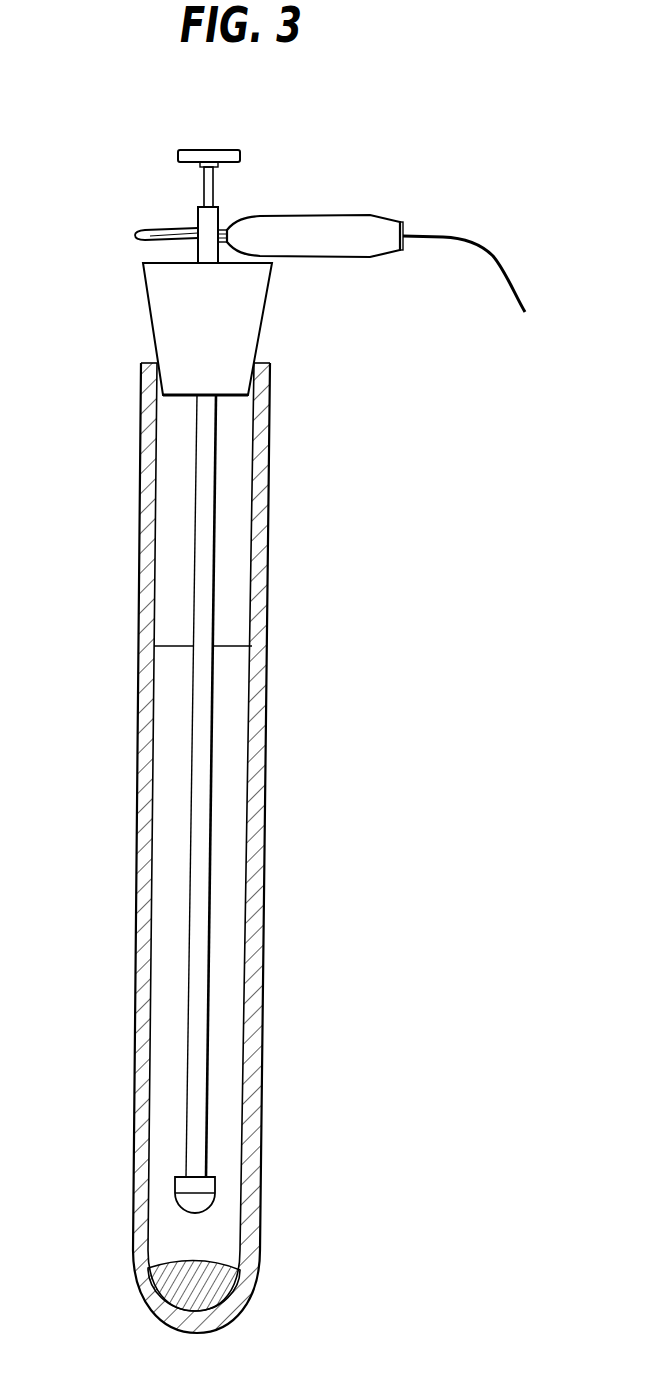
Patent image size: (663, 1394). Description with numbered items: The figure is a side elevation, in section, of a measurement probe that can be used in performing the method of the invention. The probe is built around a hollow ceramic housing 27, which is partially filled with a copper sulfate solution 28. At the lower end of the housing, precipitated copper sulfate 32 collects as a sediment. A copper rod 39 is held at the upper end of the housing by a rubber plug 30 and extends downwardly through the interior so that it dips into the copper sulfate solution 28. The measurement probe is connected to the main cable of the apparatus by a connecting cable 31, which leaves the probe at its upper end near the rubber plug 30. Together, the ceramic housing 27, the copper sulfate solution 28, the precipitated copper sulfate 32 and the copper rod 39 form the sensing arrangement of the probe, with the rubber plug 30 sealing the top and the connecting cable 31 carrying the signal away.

The hollow ceramic housing 27 is at (255, 673).
The copper sulfate solution 28 is at (227, 1063).
The rubber plug 30 is at (200, 337).
The connecting cable 31 is at (313, 205).
The precipitated copper sulfate 32 is at (167, 1293).
The rod 39 is at (182, 570).